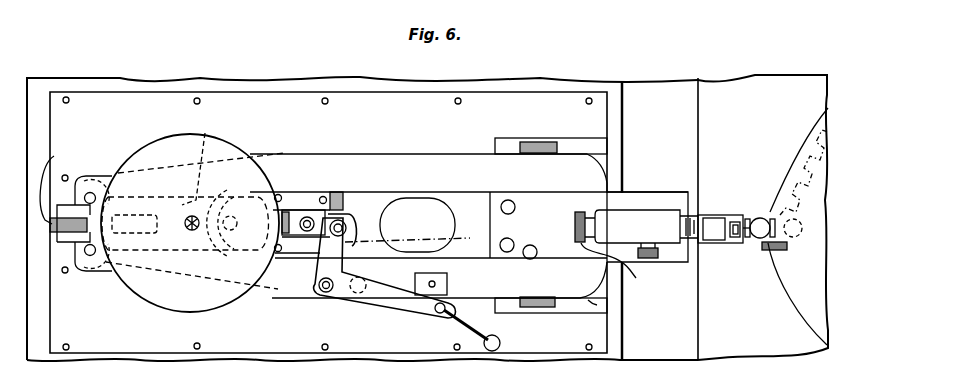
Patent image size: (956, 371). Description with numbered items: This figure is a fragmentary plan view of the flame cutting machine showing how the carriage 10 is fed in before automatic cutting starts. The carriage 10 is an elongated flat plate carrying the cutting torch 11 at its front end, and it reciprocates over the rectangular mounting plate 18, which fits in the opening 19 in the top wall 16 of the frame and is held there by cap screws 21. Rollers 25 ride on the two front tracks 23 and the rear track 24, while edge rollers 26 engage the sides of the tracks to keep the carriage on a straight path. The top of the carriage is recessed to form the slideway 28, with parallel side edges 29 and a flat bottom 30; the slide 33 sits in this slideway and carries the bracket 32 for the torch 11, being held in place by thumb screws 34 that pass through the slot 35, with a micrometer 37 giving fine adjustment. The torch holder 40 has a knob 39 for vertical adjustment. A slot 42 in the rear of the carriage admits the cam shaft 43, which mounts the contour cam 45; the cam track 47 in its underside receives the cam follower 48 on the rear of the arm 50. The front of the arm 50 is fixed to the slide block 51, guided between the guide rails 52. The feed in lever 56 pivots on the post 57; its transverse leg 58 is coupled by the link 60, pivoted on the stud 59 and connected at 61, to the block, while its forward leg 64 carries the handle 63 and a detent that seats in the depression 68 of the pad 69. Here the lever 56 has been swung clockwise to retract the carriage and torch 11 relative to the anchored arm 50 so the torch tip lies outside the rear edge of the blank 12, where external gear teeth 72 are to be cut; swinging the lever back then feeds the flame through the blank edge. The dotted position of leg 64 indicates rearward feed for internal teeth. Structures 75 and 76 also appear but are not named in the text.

The carriage 10 is at (637, 168).
The cutting torch 11 is at (760, 216).
The work piece or blank 12 is at (798, 290).
The top wall 16 is at (74, 80).
The mounting plate 18 is at (234, 100).
The rectangular opening 19 is at (116, 96).
The cap screws 21 is at (325, 98).
The tracks 23 is at (600, 148).
The rear track 24 is at (126, 178).
The rollers 25 is at (545, 146).
The edge rollers 26 is at (85, 186).
The slideway 28 is at (424, 190).
The side edges 29 is at (424, 194).
The bottom 30 is at (400, 198).
The bracket 32 is at (725, 201).
The slide 33 is at (642, 196).
The thumb screws 34 is at (512, 241).
The slot 35 is at (454, 198).
The micrometer 37 is at (622, 266).
The knob 39 is at (766, 242).
The torch holder 40 is at (757, 240).
The slot 42 is at (207, 136).
The cam shaft 43 is at (190, 230).
The contour cam 45 is at (163, 146).
The cam track 47 is at (218, 188).
The cam follower 48 is at (222, 258).
The arm 50 is at (297, 197).
The slide block 51 is at (342, 210).
The guide rails 52 is at (308, 208).
The feed in lever 56 is at (399, 326).
The post 57 is at (322, 296).
The leg 58 is at (380, 232).
The stud 59 is at (320, 216).
The link 60 is at (354, 212).
The pivotal connection 61 is at (360, 206).
The handle 63 is at (502, 342).
The leg 64 is at (358, 292).
The depression 68 is at (436, 284).
The pad 69 is at (424, 312).
The external gear teeth 72 is at (776, 170).
The housing wall 75 is at (780, 74).
The partition 76 is at (676, 96).